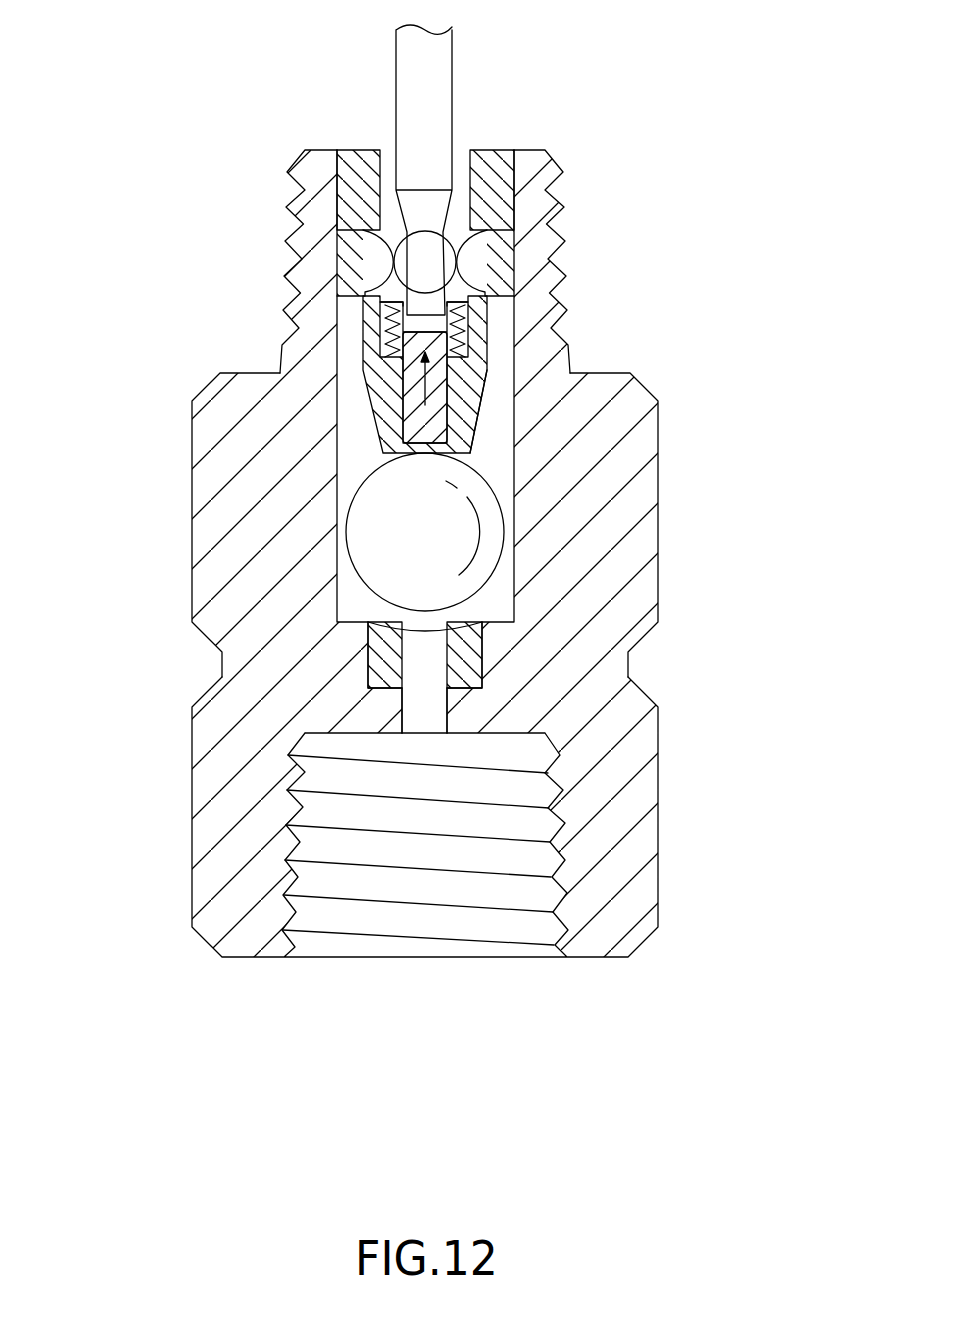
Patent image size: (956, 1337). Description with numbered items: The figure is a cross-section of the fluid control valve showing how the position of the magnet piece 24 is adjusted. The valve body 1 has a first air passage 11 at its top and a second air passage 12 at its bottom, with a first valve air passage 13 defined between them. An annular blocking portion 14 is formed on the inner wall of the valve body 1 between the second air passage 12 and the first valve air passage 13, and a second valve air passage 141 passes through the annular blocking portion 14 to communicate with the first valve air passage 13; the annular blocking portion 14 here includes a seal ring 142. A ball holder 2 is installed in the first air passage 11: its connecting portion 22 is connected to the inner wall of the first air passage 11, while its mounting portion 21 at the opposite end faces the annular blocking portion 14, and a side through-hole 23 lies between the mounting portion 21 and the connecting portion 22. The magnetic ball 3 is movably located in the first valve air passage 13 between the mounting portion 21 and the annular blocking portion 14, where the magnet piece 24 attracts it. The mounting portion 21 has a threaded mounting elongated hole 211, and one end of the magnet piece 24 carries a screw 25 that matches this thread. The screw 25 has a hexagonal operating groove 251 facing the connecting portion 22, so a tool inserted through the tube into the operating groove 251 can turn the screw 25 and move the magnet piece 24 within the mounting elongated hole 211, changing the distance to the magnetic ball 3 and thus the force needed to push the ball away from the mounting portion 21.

The valve body 1 is at (688, 350).
The first air passage 11 is at (577, 143).
The second air passage 12 is at (560, 982).
The first valve air passage 13 is at (497, 442).
The annular blocking portion 14 is at (428, 681).
The second valve air passage 141 is at (407, 712).
The seal ring 142 is at (368, 650).
The ball holder 2 is at (377, 253).
The mounting portion 21 is at (301, 331).
The mounting elongated hole 211 is at (420, 384).
The connecting portion 22 is at (490, 150).
The side through-hole 23 is at (472, 268).
The magnet piece 24 is at (480, 402).
The screw 25 is at (395, 304).
The operating groove 251 is at (420, 310).
The magnetic ball 3 is at (487, 565).